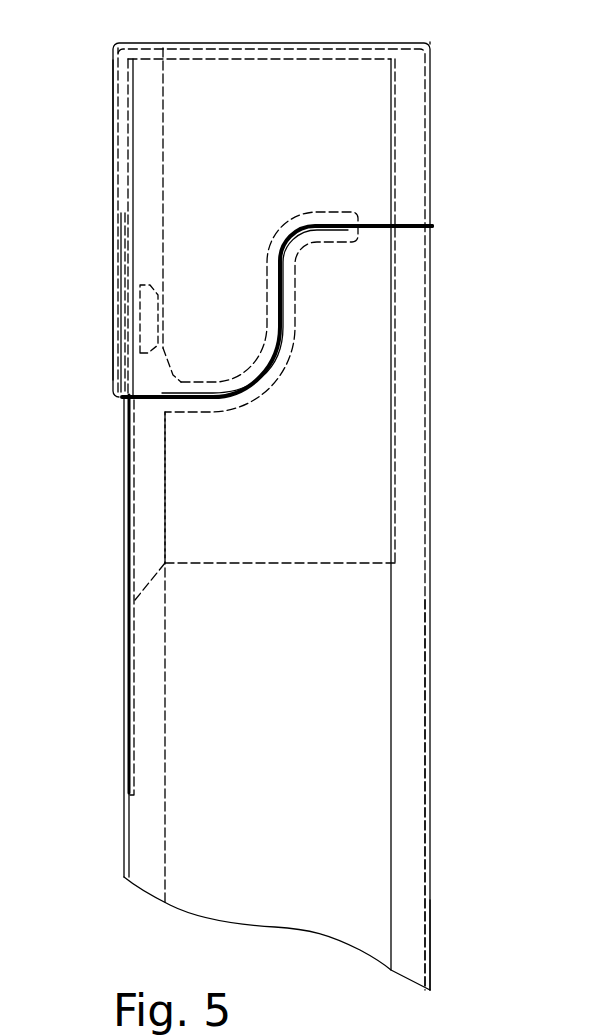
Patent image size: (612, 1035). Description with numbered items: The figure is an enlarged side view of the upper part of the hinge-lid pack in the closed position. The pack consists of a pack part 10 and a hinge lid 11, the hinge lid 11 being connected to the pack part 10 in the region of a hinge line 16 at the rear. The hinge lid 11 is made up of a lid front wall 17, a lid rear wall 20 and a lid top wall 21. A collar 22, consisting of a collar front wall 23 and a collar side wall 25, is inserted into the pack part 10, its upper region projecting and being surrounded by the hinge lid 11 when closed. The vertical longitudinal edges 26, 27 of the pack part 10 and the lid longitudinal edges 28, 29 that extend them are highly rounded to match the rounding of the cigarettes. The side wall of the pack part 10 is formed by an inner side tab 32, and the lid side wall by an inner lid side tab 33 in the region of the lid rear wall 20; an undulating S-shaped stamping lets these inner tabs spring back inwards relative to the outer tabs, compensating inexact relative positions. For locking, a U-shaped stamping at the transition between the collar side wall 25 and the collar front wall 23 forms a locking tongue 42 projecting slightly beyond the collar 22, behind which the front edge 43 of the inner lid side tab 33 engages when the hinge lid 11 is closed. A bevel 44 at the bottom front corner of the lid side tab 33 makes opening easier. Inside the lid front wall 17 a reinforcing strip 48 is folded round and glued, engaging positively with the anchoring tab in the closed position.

The pack part 10 is at (448, 652).
The hinge lid 11 is at (440, 32).
The hinge line 16 is at (432, 226).
The lid front wall 17 is at (118, 128).
The lid rear wall 20 is at (425, 82).
The lid top wall 21 is at (247, 48).
The collar 22 is at (330, 574).
The collar front wall 23 is at (133, 636).
The collar side wall 25 is at (327, 398).
The vertical longitudinal edge 26 is at (145, 810).
The vertical longitudinal edge 27 is at (408, 700).
The lid longitudinal edge 28 is at (150, 88).
The lid longitudinal edge 29 is at (407, 137).
The side tab 32 is at (283, 360).
The lid side tab 33 is at (195, 112).
The locking tongue 42 is at (152, 308).
The front edge 43 is at (160, 262).
The bevel 44 is at (173, 368).
The reinforcing strip 48 is at (122, 235).